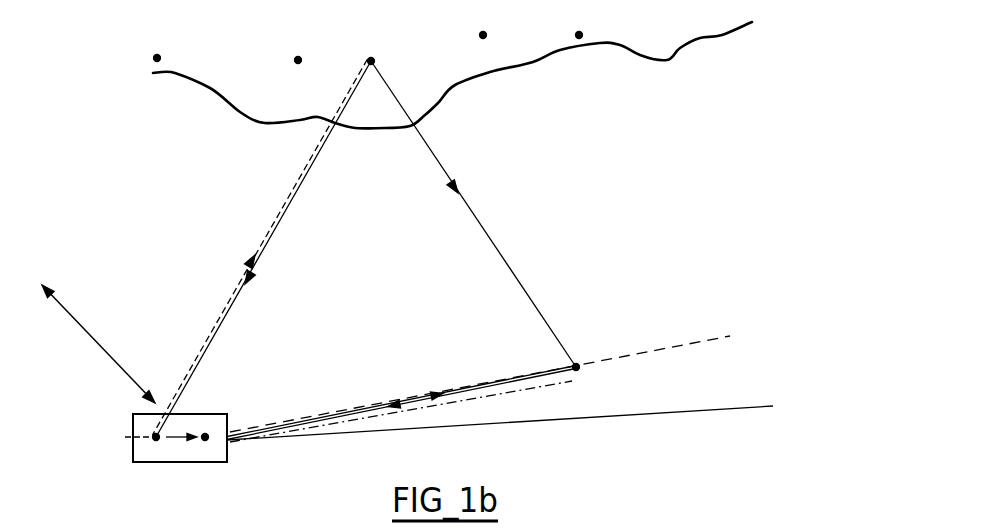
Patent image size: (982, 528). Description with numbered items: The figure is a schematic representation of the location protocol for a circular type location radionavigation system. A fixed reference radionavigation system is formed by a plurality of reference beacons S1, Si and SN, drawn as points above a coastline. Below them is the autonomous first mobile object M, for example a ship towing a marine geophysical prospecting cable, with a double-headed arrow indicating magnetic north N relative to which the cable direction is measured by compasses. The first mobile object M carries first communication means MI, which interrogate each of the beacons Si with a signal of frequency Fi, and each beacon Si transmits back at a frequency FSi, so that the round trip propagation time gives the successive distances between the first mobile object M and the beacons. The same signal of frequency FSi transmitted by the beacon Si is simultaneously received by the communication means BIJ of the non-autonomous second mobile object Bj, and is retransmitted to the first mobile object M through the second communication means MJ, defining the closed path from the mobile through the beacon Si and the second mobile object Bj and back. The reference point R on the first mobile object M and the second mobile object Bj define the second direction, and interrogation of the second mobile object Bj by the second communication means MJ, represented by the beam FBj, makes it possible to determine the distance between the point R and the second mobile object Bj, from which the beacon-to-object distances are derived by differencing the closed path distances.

The reference beacon S1 is at (159, 42).
The reference beacon Si is at (367, 45).
The reference beacon SN is at (583, 22).
The transmission frequency of beacon Si FSi is at (273, 235).
The interrogation signal frequency Fi is at (221, 314).
The magnetic north N is at (65, 311).
The first mobile object M is at (178, 455).
The first communication means MI is at (148, 445).
The second communication means MJ is at (205, 442).
The reference point R is at (228, 442).
The beam between vehicle and beacon Bj FBj is at (371, 405).
The communication means of the second mobile object BIJ is at (580, 363).
The second mobile object Bj is at (592, 377).